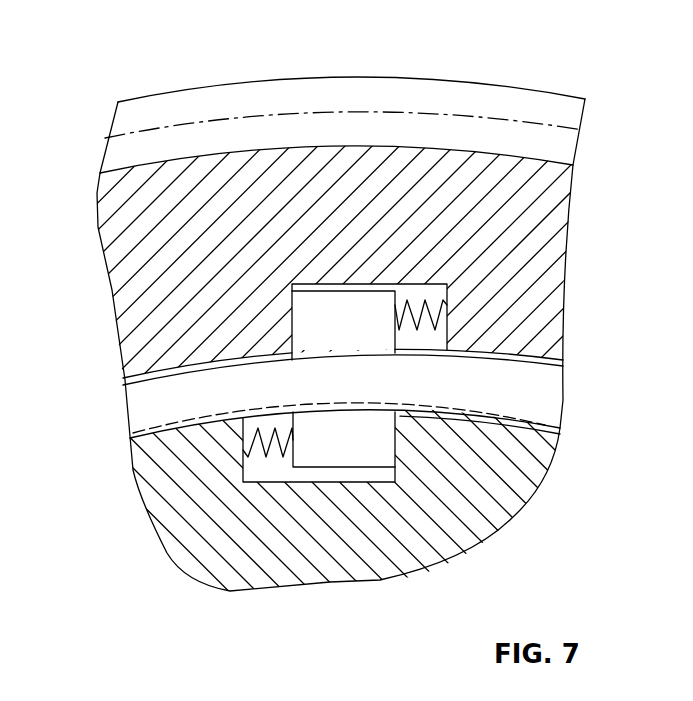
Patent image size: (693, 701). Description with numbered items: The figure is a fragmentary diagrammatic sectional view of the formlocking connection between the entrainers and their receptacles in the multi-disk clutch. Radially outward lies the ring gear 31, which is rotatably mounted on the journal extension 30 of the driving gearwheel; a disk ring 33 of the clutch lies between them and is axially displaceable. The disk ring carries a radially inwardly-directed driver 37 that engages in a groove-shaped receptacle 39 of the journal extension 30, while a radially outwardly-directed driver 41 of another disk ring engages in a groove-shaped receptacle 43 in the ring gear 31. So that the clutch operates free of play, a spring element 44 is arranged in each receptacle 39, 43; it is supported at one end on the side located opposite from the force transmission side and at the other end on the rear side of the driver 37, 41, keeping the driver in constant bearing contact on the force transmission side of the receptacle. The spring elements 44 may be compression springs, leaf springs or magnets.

The journal extension 30 is at (330, 582).
The ring gear 31 is at (352, 90).
The disk ring 33 is at (533, 397).
The driver 37 is at (373, 443).
The groove-shaped receptacle 39 is at (247, 480).
The driver 41 is at (313, 312).
The groove-shaped receptacle 43 is at (425, 337).
The spring element 44 is at (440, 305).